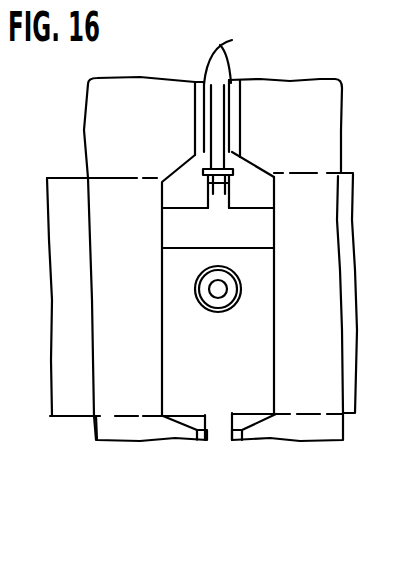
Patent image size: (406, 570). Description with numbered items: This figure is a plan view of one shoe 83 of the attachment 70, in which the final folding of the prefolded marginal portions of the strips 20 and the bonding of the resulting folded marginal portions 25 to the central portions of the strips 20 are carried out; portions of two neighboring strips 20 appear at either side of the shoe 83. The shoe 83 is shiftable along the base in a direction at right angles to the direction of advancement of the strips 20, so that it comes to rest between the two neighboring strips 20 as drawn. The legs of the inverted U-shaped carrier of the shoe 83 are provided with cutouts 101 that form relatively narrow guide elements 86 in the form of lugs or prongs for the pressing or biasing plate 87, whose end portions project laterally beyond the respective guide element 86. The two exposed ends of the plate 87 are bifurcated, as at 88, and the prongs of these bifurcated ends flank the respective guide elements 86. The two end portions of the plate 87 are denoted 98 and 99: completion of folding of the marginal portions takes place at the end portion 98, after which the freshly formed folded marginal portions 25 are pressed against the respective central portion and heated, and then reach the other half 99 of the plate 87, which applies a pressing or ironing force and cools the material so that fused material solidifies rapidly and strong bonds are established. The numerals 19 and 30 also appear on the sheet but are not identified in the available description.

The direction of insertion 19 is at (6, 300).
The strip 20 is at (137, 85).
The folded marginal portion 25 is at (231, 54).
The lower housing portions 30 is at (204, 462).
The attachment 70 is at (70, 152).
The shoe 83 is at (161, 277).
The guide element 86 is at (232, 184).
The plate 87 is at (256, 172).
The bifurcated end 88 is at (219, 152).
The end portion of the plate 98 is at (157, 257).
The end portion of the plate 99 is at (182, 430).
The cutout 101 is at (188, 215).